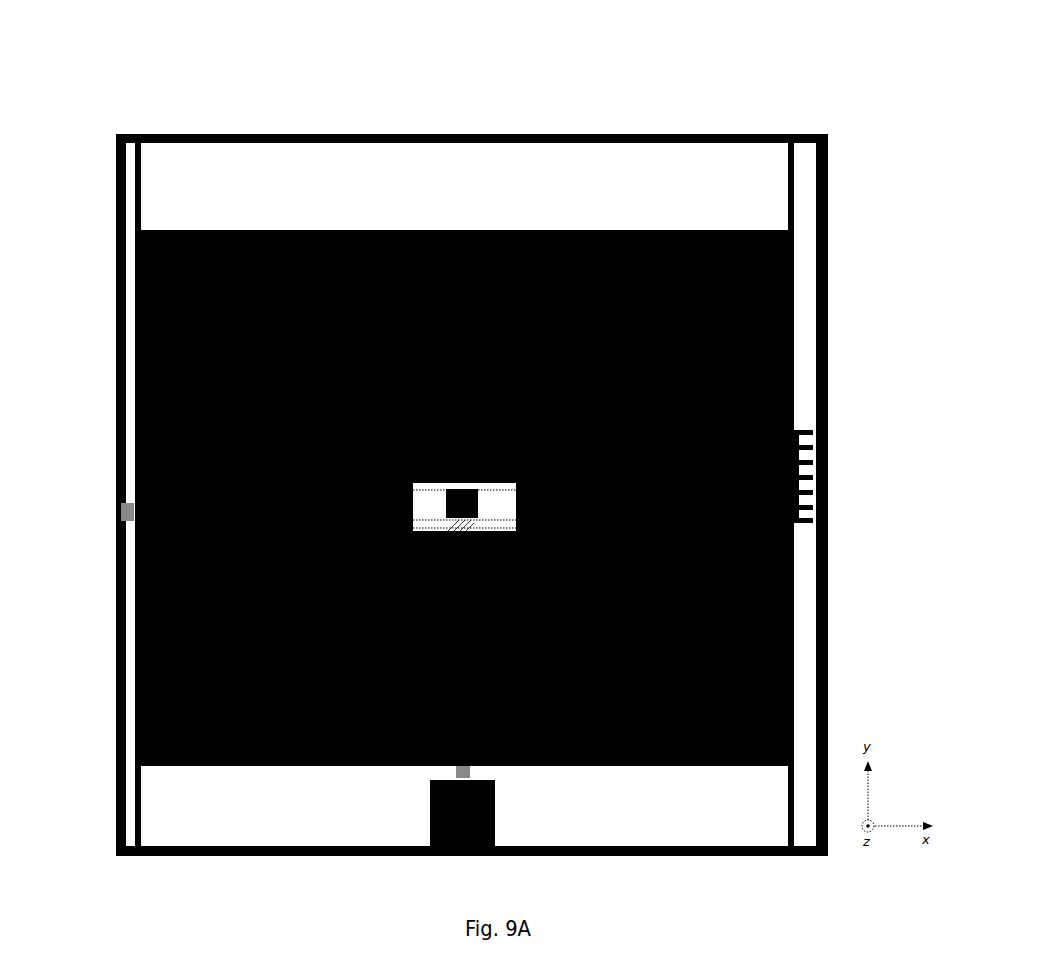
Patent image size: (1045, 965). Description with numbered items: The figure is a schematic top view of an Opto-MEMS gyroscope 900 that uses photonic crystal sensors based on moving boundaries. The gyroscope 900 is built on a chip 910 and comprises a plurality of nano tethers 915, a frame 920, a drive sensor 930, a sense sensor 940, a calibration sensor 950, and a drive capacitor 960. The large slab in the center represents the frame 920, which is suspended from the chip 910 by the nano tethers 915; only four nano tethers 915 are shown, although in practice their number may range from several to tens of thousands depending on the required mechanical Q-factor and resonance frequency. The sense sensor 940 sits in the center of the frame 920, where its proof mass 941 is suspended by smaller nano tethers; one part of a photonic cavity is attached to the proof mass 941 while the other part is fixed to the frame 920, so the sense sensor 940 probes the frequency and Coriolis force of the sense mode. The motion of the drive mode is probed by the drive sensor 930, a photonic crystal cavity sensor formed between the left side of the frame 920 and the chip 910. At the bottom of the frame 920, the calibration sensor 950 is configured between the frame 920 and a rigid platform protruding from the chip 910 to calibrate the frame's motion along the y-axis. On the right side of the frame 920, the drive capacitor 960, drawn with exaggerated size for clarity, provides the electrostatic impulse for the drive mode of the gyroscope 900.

The gyroscope 900 is at (320, 89).
The chip 910 is at (555, 125).
The nano tethers 915 is at (780, 166).
The frame 920 is at (783, 293).
The drive sensor 930 is at (120, 520).
The sense sensor 940 is at (472, 477).
The proof mass 941 is at (462, 498).
The calibration sensor 950 is at (437, 765).
The drive capacitor 960 is at (806, 470).